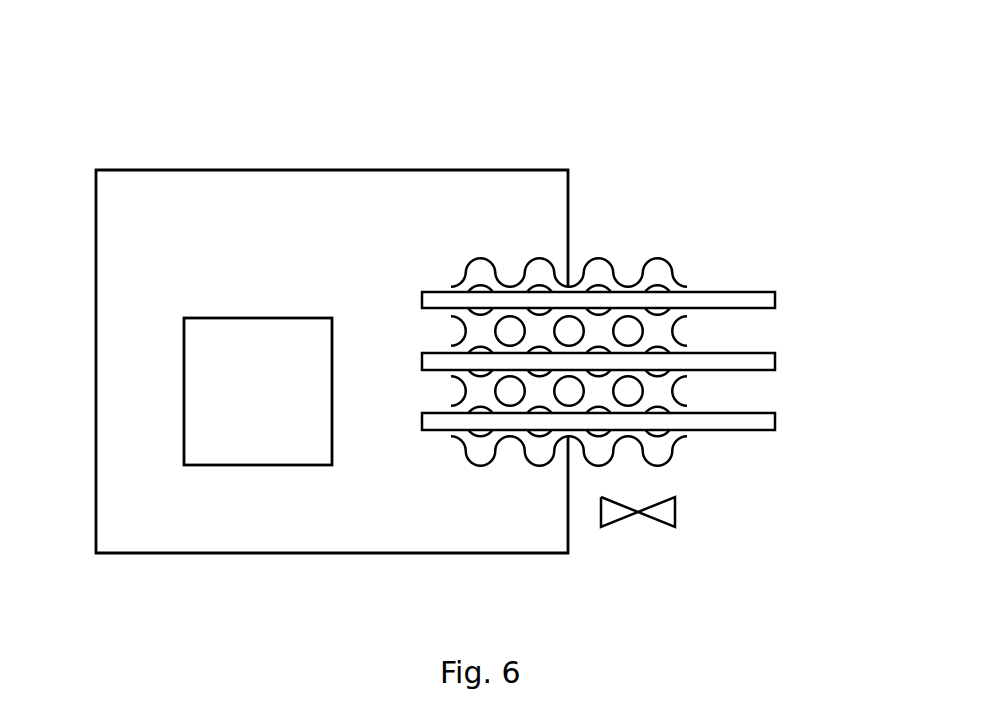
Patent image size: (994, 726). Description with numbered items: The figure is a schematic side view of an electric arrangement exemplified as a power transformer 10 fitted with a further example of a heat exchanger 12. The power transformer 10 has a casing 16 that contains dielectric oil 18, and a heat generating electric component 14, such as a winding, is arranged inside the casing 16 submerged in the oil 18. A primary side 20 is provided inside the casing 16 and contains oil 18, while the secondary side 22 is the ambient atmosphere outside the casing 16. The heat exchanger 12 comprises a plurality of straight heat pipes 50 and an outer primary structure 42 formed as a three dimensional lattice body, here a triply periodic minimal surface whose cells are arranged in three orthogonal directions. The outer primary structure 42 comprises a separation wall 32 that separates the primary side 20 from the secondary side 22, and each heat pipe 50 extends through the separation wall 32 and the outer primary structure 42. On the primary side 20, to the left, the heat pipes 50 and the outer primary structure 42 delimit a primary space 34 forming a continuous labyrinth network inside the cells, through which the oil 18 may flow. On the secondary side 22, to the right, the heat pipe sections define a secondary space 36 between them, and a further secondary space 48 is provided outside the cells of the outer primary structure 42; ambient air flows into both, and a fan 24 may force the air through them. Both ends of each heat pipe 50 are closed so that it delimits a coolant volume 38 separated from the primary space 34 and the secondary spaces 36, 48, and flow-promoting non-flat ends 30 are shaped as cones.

The power transformer 10 is at (226, 108).
The heat exchanger 12 is at (656, 186).
The electric component 14 is at (241, 408).
The casing 16 is at (96, 220).
The oil 18 is at (362, 538).
The primary side 20 is at (508, 212).
The secondary side 22 is at (892, 328).
The fan 24 is at (666, 512).
The flow-promoting non-flat ends 30 is at (661, 256).
The separation wall 32 is at (680, 386).
The primary space 34 is at (472, 382).
The secondary space 36 is at (721, 344).
The coolant volume 38 is at (758, 363).
The outer primary structure 42 is at (472, 256).
The secondary space 48 is at (628, 331).
The heat pipes 50 is at (758, 303).